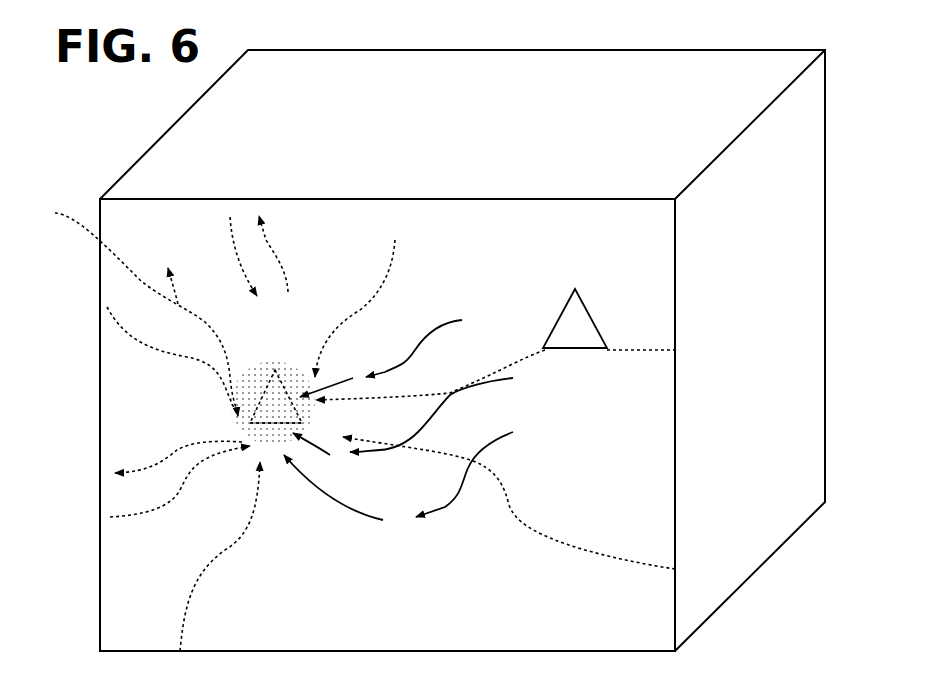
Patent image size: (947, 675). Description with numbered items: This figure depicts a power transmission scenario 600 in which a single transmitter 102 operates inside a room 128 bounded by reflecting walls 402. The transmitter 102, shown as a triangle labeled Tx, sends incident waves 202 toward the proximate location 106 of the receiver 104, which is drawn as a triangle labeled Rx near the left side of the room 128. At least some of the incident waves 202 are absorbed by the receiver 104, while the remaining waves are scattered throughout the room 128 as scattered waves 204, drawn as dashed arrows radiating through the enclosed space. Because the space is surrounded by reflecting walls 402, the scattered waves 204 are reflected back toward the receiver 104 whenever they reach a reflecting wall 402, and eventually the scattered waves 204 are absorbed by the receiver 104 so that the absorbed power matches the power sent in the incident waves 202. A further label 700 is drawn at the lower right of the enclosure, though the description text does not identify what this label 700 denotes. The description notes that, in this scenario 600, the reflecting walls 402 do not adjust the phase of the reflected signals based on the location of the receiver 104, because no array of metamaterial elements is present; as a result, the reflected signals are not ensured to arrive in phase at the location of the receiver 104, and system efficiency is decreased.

The reflecting walls 402 is at (148, 147).
The room 128 is at (604, 85).
The transmitter 102 is at (588, 328).
The receiver 104 is at (270, 404).
The proximate location 106 is at (255, 388).
The incident waves 202 is at (435, 325).
The scattered waves 204 is at (343, 426).
The scenario 600 is at (878, 49).
The reflecting chamber 700 is at (839, 662).